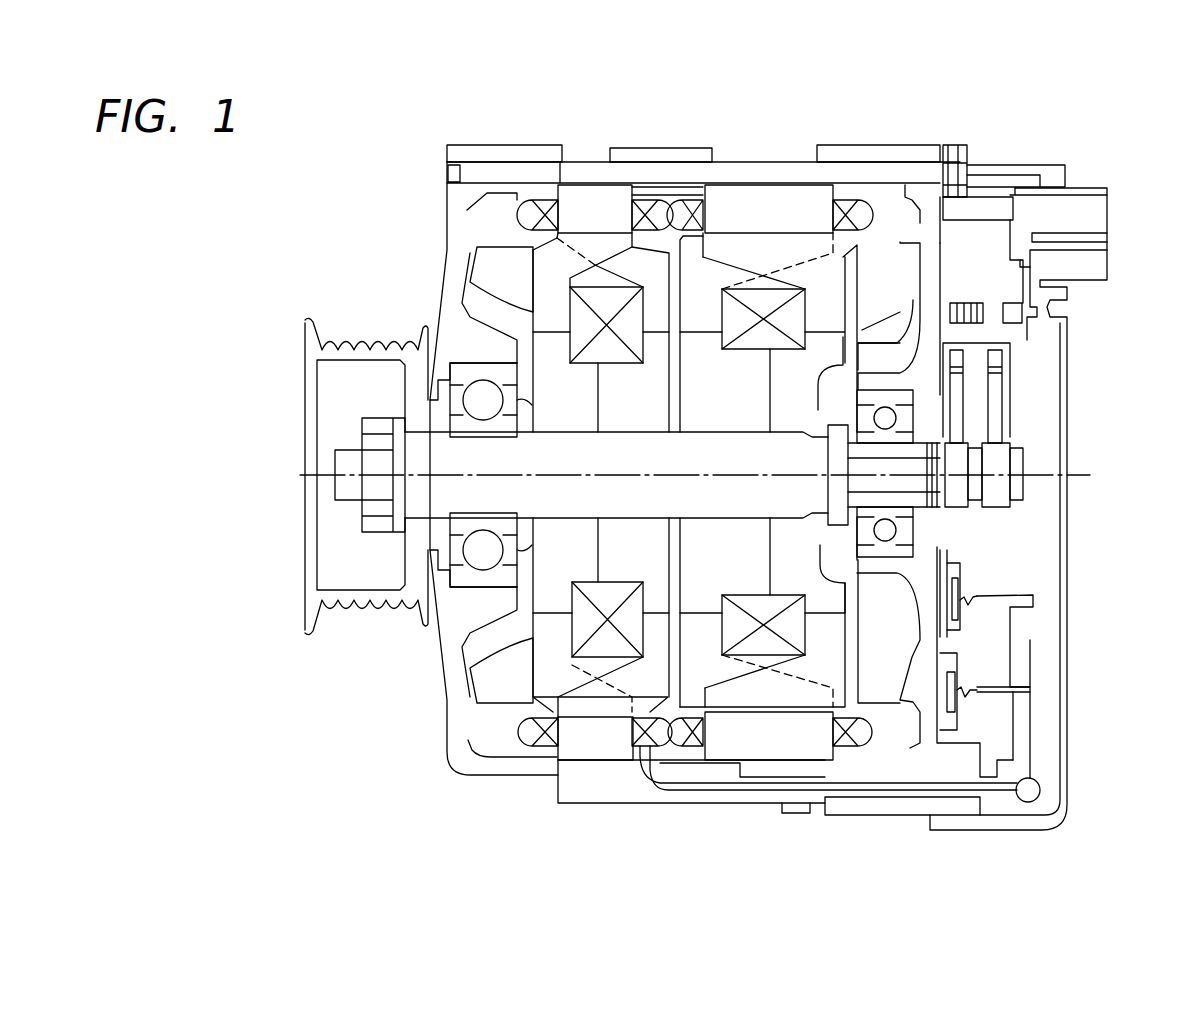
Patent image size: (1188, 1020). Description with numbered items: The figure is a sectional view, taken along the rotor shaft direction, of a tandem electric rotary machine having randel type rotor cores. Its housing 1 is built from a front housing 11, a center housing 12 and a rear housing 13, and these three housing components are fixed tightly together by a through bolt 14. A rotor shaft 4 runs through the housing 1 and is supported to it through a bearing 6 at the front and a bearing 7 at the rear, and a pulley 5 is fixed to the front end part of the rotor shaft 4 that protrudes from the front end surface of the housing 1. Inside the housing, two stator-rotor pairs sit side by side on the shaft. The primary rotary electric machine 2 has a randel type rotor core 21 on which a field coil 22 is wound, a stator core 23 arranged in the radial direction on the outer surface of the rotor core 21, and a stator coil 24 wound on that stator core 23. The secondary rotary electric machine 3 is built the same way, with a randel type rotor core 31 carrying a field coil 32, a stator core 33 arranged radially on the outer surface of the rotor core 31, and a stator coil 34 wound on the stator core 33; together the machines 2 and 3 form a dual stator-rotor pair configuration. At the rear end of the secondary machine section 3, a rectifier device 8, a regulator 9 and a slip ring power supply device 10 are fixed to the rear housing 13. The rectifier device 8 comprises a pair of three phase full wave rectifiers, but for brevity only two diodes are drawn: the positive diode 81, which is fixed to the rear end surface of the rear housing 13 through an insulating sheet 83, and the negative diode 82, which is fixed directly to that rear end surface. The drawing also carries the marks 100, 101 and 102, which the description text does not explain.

The housing 1 is at (492, 143).
The primary rotary electric machine 2 is at (593, 158).
The secondary rotary electric machine 3 is at (744, 160).
The rotor shaft 4 is at (594, 494).
The pulley 5 is at (333, 325).
The bearing 6 is at (488, 432).
The bearing 7 is at (872, 502).
The rectifier device 8 is at (1052, 601).
The regulator 9 is at (980, 274).
The slip ring power supply device 10 is at (1033, 393).
The front housing 11 is at (482, 768).
The center housing 12 is at (636, 208).
The rear housing 13 is at (917, 217).
The through bolt 14 is at (692, 200).
The randel type rotor core 21 is at (580, 560).
The field coil 22 is at (620, 348).
The stator core 23 is at (585, 200).
The stator coil 24 is at (540, 200).
The randel type rotor core 31 is at (742, 560).
The field coil 32 is at (752, 349).
The stator core 33 is at (762, 195).
The stator coil 34 is at (695, 200).
The positive diode 81 is at (958, 585).
The negative diode 82 is at (958, 678).
The insulating sheet 83 is at (953, 560).
The lead wire 100 is at (652, 750).
The cooling air flow (front) 101 is at (522, 278).
The cooling air flow (rear) 102 is at (868, 266).